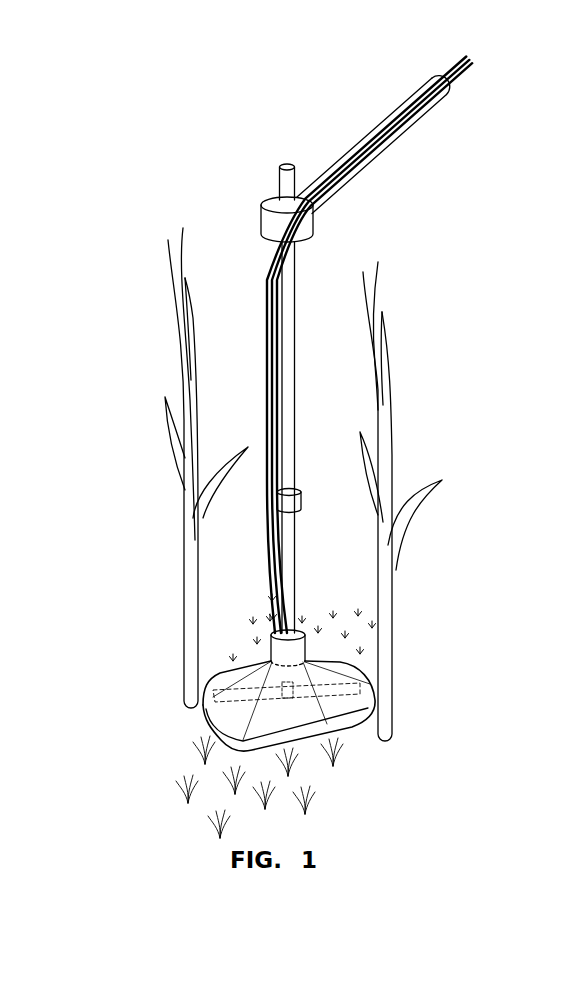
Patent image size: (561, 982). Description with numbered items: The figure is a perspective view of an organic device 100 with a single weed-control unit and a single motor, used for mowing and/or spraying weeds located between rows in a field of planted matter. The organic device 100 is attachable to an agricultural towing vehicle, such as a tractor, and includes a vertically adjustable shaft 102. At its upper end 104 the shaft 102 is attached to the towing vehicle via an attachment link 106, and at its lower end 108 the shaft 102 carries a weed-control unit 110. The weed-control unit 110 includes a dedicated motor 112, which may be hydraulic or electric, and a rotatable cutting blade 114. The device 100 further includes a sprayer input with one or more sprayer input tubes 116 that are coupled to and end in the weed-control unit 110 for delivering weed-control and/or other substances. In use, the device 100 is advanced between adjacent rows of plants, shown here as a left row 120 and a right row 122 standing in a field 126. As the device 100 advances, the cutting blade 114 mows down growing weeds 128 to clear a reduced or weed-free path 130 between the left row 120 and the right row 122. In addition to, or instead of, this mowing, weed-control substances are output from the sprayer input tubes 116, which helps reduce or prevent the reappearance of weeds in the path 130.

The organic device 100 is at (205, 138).
The vertically adjustable shaft 102 is at (290, 355).
The upper end 104 is at (260, 223).
The attachment link 106 is at (410, 103).
The lower end 108 is at (290, 540).
The weed-control unit 110 is at (313, 661).
The motor 112 is at (273, 652).
The rotatable cutting blade 114 is at (232, 714).
The sprayer input tubes 116 is at (273, 528).
The left row 120 is at (167, 240).
The right row 122 is at (383, 260).
The field 126 is at (195, 810).
The weeds 128 is at (305, 813).
The path 130 is at (365, 615).